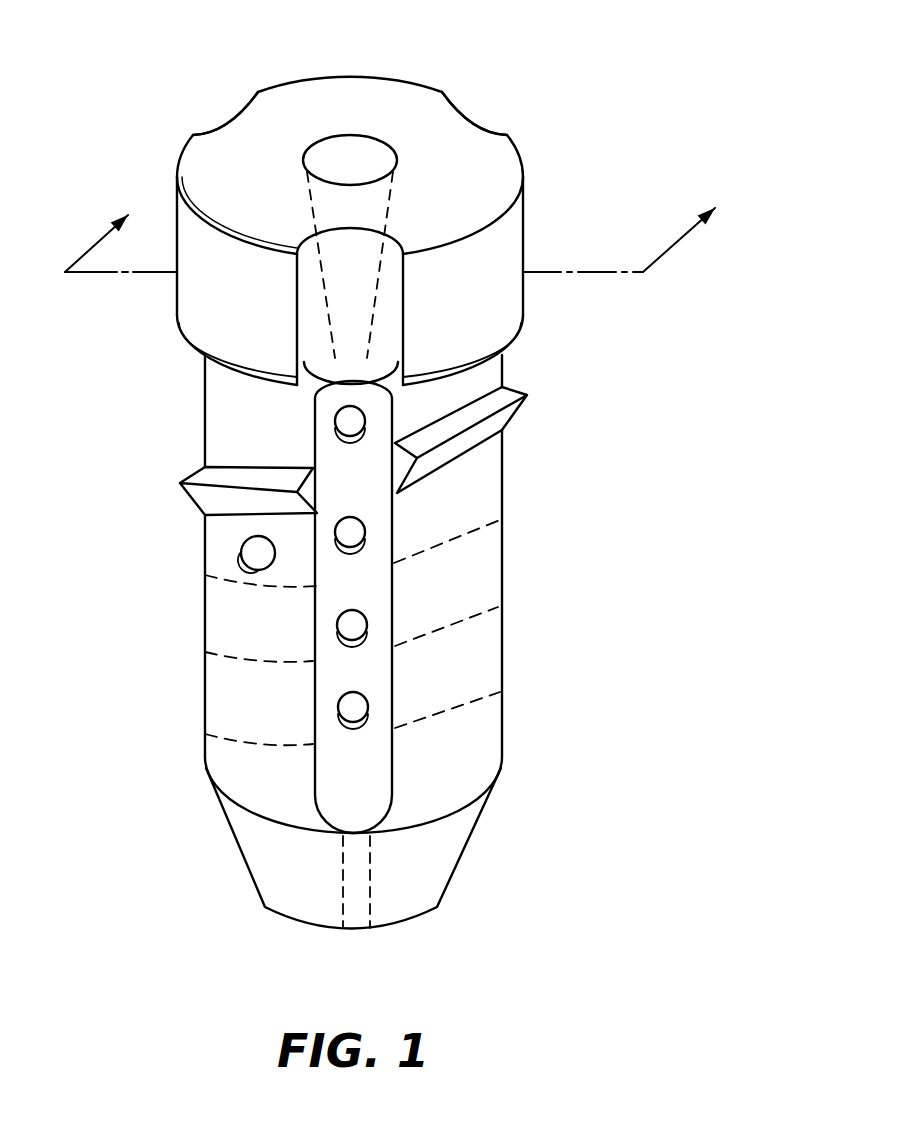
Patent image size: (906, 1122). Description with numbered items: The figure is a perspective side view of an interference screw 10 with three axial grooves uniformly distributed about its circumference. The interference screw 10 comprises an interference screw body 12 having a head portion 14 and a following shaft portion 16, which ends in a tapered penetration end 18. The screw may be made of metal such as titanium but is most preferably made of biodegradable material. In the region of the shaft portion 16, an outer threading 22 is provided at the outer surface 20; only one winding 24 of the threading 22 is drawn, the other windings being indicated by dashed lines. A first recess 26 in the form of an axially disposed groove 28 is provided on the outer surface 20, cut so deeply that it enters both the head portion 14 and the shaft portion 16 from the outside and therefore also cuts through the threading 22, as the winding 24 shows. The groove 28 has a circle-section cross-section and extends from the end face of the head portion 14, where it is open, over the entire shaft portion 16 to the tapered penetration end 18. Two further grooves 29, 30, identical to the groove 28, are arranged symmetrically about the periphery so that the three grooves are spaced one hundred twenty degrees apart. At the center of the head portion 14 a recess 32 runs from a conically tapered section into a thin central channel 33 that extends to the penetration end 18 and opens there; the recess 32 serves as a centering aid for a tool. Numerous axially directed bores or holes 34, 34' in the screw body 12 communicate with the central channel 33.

The interference screw 10 is at (602, 122).
The interference screw body 12 is at (351, 579).
The head portion 14 is at (315, 207).
The shaft portion 16 is at (350, 644).
The tapered penetration end 18 is at (332, 877).
The outer surface 20 is at (481, 498).
The outer threading 22 is at (492, 427).
The winding 24 is at (213, 492).
The first recess 26 is at (385, 270).
The axial groove 28 is at (452, 607).
The further groove 29 is at (237, 113).
The further groove 30 is at (477, 117).
The recess 32 is at (362, 152).
The central channel 33 is at (357, 918).
The bore 34 is at (173, 575).
The bore 34' is at (463, 604).